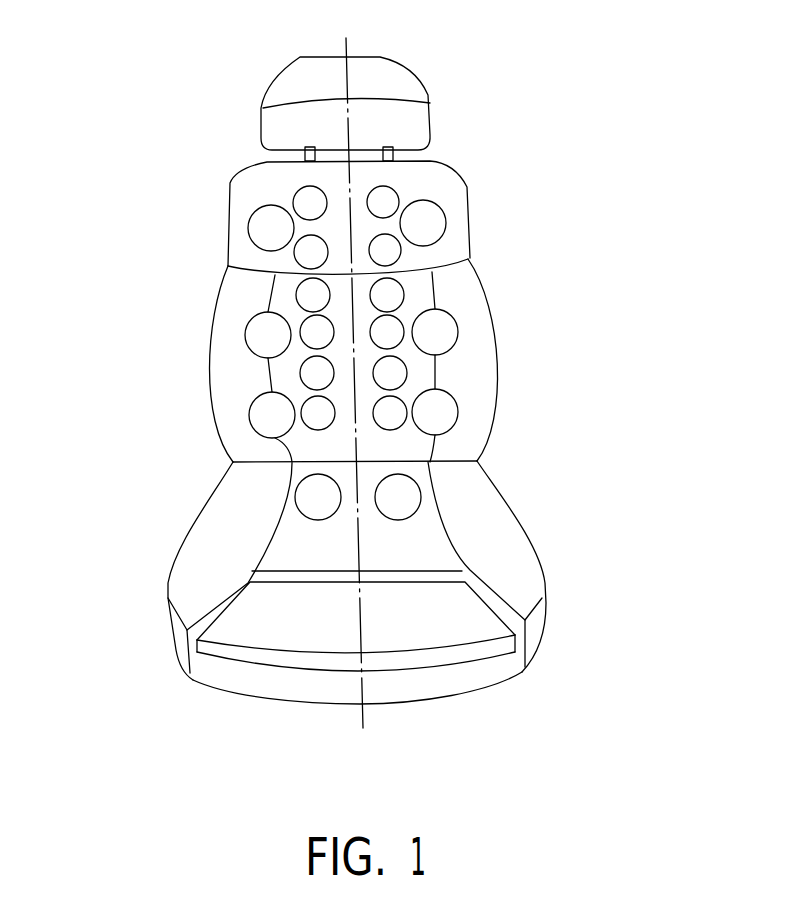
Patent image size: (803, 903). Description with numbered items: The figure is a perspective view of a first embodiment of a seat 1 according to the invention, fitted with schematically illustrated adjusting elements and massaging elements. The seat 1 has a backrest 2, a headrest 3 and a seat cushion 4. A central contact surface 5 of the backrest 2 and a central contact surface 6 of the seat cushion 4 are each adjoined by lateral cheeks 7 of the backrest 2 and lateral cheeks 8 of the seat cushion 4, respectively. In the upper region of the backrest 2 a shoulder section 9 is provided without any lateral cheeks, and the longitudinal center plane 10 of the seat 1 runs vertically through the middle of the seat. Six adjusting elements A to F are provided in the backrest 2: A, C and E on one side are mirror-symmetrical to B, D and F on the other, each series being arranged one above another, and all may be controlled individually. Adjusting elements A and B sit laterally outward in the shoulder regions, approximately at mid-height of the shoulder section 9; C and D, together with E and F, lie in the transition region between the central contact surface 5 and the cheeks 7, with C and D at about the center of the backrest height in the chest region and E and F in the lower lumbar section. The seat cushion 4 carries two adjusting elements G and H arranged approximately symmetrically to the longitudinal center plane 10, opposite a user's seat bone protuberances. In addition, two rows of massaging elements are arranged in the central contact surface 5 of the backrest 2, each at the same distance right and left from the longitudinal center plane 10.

The seat 1 is at (138, 460).
The backrest 2 is at (196, 275).
The headrest 3 is at (272, 129).
The seat cushion 4 is at (143, 580).
The central contact surface of the backrest 5 is at (412, 438).
The central contact surface of the seat cushion 6 is at (435, 547).
The lateral cheeks of the backrest 7 is at (220, 378).
The lateral cheeks of the seat cushion 8 is at (213, 538).
The shoulder section 9 is at (403, 172).
The longitudinal center plane 10 is at (348, 43).